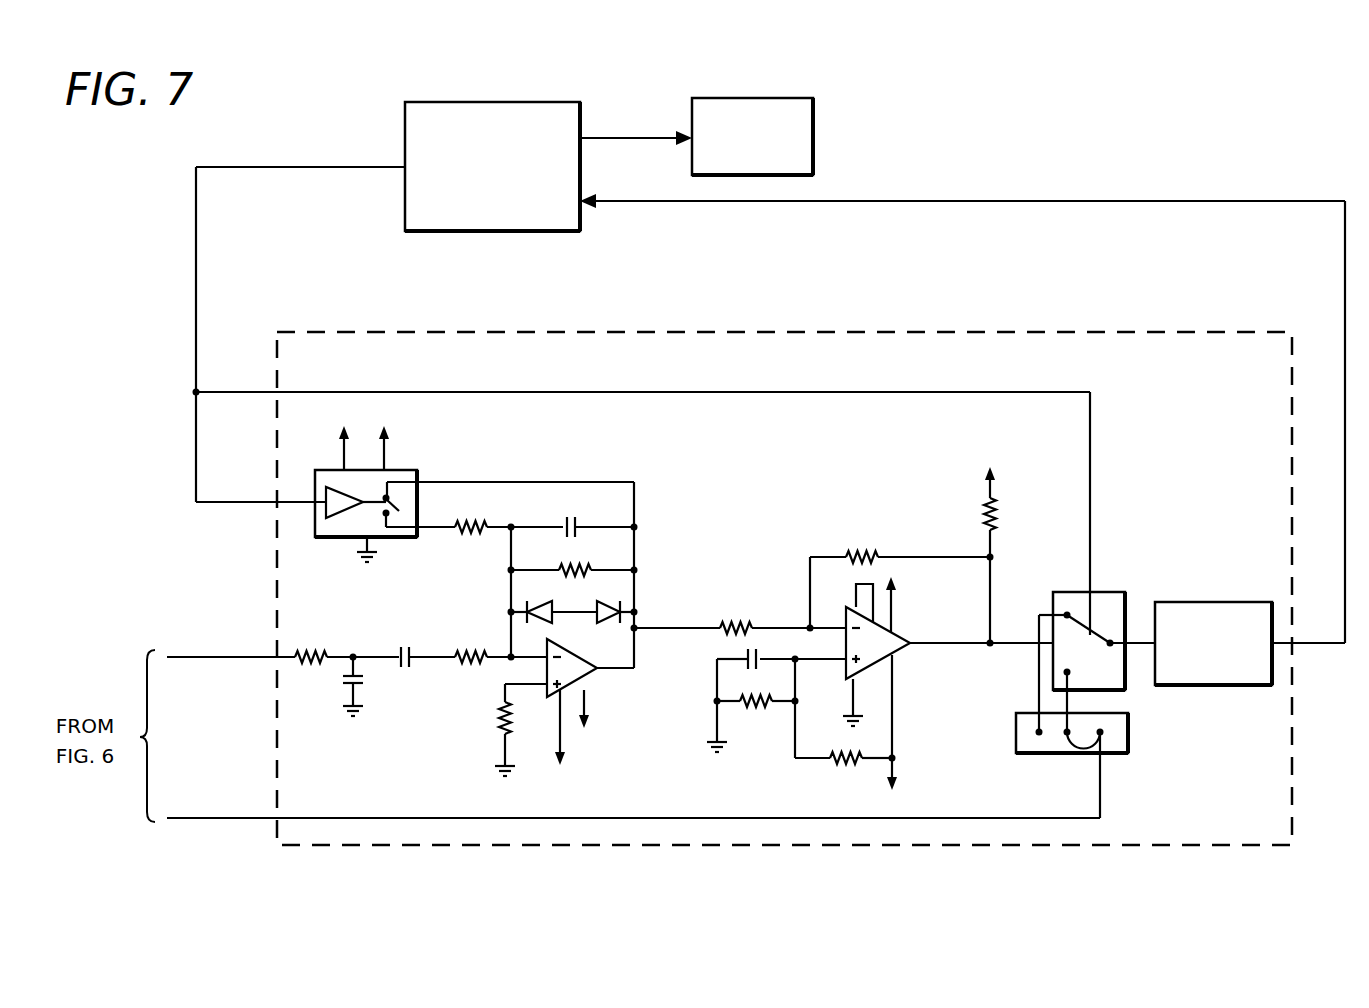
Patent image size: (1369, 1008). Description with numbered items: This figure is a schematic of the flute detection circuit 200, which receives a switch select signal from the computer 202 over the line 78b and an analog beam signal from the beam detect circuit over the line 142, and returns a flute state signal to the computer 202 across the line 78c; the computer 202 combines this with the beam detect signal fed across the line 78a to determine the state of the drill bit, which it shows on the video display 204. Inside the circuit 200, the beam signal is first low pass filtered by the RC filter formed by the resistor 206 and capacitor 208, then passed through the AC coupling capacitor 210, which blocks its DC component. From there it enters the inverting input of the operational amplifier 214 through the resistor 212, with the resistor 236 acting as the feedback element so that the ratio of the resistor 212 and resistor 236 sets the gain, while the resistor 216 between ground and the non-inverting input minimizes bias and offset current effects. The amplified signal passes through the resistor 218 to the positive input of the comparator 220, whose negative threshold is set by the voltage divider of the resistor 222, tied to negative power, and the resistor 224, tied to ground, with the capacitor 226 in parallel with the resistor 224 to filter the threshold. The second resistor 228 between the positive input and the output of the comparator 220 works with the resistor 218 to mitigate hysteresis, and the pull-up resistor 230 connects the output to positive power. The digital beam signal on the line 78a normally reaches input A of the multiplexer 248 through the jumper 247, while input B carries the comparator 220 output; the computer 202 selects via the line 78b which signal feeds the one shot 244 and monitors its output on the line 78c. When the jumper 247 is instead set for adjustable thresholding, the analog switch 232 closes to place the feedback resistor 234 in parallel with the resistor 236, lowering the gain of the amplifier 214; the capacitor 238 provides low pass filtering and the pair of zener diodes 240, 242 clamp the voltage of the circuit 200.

The computer 202 is at (520, 102).
The video display 204 is at (770, 98).
The line 78a is at (252, 818).
The line 78b is at (196, 281).
The line 78c is at (936, 201).
The line 142 is at (252, 657).
The flute detection circuit 200 is at (1150, 845).
The resistor 206 is at (302, 651).
The capacitor 208 is at (362, 680).
The AC coupling capacitor 210 is at (403, 647).
The resistor 212 is at (471, 651).
The operational amplifier 214 is at (586, 674).
The resistor 216 is at (505, 714).
The resistor 218 is at (748, 623).
The comparator 220 is at (880, 662).
The resistor 222 is at (845, 766).
The resistor 224 is at (746, 714).
The capacitor 226 is at (746, 660).
The second resistor 228 is at (877, 556).
The pull-up resistor 230 is at (995, 512).
The analog switch 232 is at (405, 470).
The feedback resistor 234 is at (466, 538).
The resistor 236 is at (600, 568).
The capacitor 238 is at (566, 522).
The zener diode 240 is at (545, 606).
The zener diode 242 is at (603, 608).
The one shot 244 is at (1222, 602).
The jumper 247 is at (1128, 726).
The multiplexer 248 is at (1104, 592).